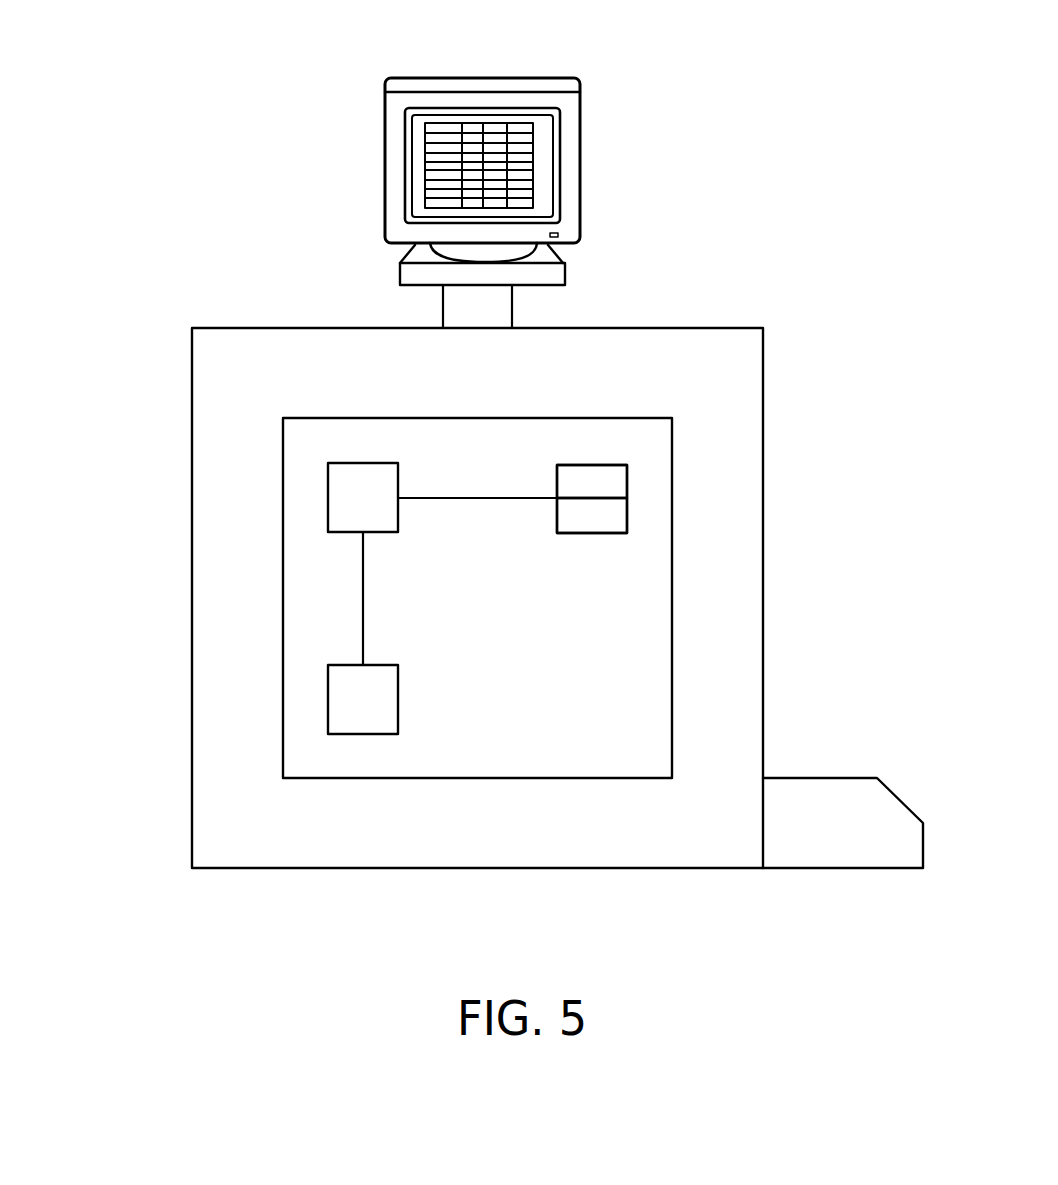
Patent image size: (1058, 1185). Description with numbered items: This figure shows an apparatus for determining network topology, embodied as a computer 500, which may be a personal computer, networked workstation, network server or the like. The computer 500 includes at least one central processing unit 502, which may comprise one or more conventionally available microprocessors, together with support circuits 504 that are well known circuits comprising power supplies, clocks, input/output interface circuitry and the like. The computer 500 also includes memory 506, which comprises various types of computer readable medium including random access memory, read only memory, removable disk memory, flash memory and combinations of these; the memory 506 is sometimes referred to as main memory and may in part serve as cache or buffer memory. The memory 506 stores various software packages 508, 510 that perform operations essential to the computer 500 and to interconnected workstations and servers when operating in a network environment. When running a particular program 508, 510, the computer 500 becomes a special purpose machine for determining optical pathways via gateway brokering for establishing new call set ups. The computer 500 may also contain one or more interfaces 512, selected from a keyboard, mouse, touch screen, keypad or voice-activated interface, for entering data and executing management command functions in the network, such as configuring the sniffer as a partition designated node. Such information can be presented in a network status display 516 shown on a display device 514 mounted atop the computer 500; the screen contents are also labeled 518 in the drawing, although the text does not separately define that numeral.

The computer 500 is at (192, 800).
The central processing unit 502 is at (328, 498).
The support circuits 504 is at (328, 700).
The memory 506 is at (593, 465).
The software package 508 is at (627, 482).
The software package 510 is at (627, 517).
The interface 512 is at (808, 778).
The display device 514 is at (535, 78).
The network status display 516 is at (627, 165).
The displayed data values 518 is at (533, 177).